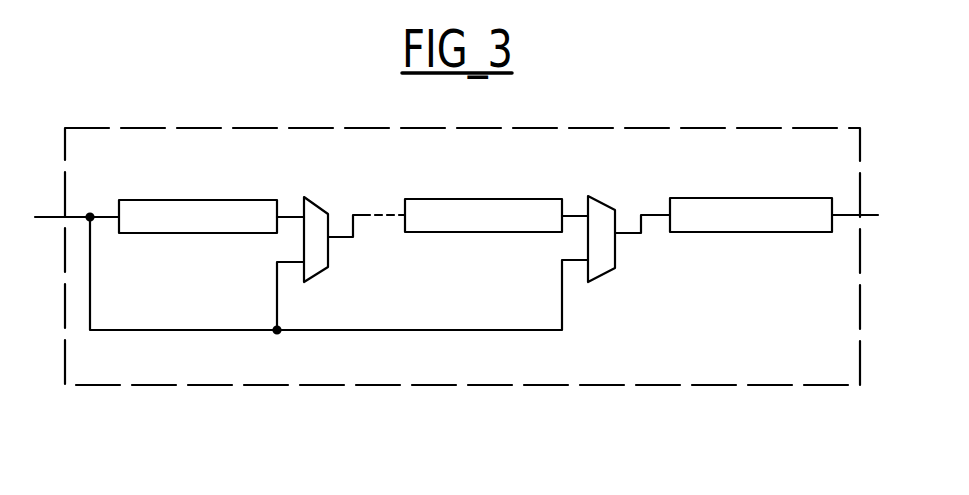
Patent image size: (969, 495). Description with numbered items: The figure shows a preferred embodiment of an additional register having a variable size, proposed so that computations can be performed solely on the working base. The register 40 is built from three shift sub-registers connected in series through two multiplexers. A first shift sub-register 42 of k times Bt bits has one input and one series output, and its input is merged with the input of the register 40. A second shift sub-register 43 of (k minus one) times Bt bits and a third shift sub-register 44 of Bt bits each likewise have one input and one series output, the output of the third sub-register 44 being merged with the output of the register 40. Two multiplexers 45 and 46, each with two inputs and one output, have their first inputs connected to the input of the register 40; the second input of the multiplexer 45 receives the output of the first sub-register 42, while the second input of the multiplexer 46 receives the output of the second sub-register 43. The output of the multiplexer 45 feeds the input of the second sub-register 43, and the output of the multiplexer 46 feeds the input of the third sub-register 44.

The register 40 is at (742, 385).
The first shift sub-register 42 is at (175, 200).
The second shift sub-register 43 is at (472, 199).
The third shift sub-register 44 is at (730, 198).
The multiplexer 45 is at (328, 278).
The multiplexer 46 is at (603, 272).